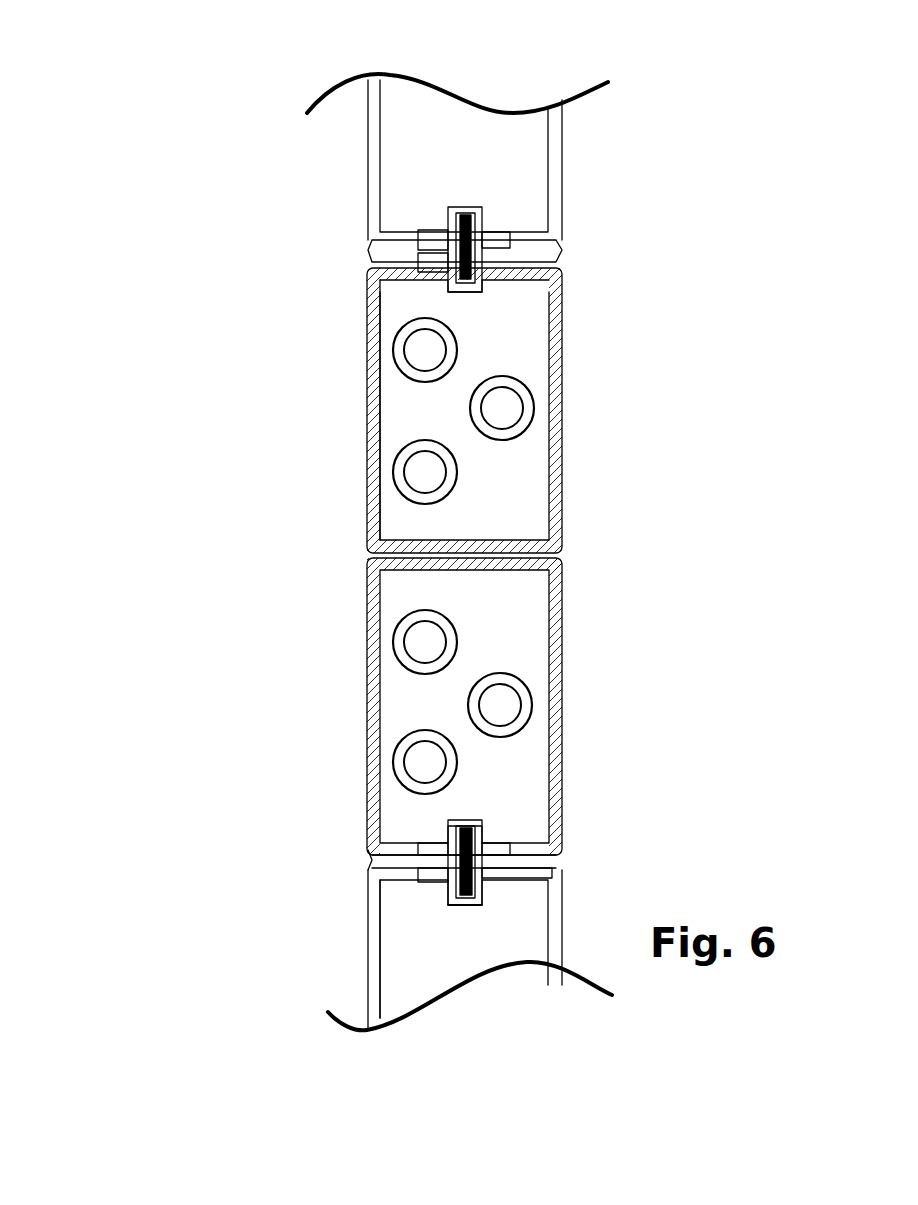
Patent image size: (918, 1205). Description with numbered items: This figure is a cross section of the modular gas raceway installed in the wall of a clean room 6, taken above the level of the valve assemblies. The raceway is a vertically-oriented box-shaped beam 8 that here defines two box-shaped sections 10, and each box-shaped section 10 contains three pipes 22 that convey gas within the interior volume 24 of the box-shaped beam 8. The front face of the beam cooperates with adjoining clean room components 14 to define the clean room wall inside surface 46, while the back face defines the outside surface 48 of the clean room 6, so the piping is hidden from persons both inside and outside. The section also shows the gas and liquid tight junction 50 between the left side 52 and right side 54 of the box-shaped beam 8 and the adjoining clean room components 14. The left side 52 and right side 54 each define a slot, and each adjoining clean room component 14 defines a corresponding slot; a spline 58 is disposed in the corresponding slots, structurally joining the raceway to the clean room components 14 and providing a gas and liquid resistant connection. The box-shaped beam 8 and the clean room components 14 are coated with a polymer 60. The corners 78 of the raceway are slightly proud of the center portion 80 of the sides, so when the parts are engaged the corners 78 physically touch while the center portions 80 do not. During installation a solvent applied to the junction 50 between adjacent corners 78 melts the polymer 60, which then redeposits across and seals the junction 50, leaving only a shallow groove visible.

The clean room 6 is at (51, 609).
The box-shaped beam 8 is at (370, 405).
The box-shaped section 10 is at (562, 425).
The clean room component 14 is at (565, 156).
The pipe 22 is at (502, 405).
The interior volume 24 is at (412, 405).
The clean room wall inside surface 46 is at (368, 690).
The outside surface 48 is at (563, 753).
The junction 50 is at (372, 247).
The left side 52 is at (372, 267).
The right side 54 is at (368, 860).
The spline 58 is at (470, 245).
The polymer 60 is at (368, 190).
The corner 78 is at (370, 852).
The center portion 80 is at (490, 876).